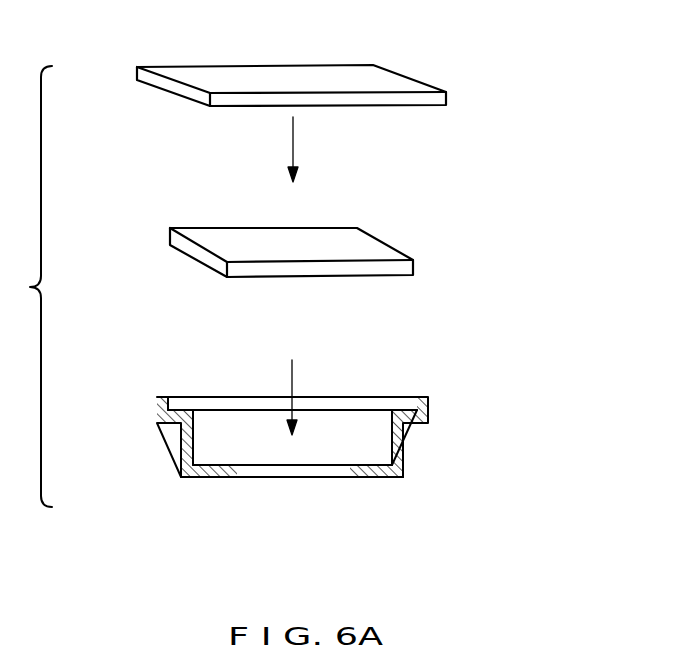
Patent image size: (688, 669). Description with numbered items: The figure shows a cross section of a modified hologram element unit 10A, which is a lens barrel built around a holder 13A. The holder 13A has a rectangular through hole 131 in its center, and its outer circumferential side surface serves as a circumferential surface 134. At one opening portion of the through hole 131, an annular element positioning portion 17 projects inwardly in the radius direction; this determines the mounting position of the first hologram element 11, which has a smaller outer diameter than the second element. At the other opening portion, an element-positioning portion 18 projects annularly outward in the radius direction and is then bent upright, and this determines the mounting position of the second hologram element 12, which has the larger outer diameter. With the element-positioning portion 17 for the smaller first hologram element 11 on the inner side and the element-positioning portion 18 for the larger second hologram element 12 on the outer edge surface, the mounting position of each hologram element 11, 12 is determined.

The hologram element unit 10A is at (316, 435).
The first hologram element 11 is at (387, 242).
The second hologram element 12 is at (181, 73).
The holder 13A is at (420, 438).
The through hole 131 is at (205, 443).
The circumferential surface 134 is at (405, 477).
The element positioning portion 17 is at (198, 474).
The element-positioning portion 18 is at (185, 378).